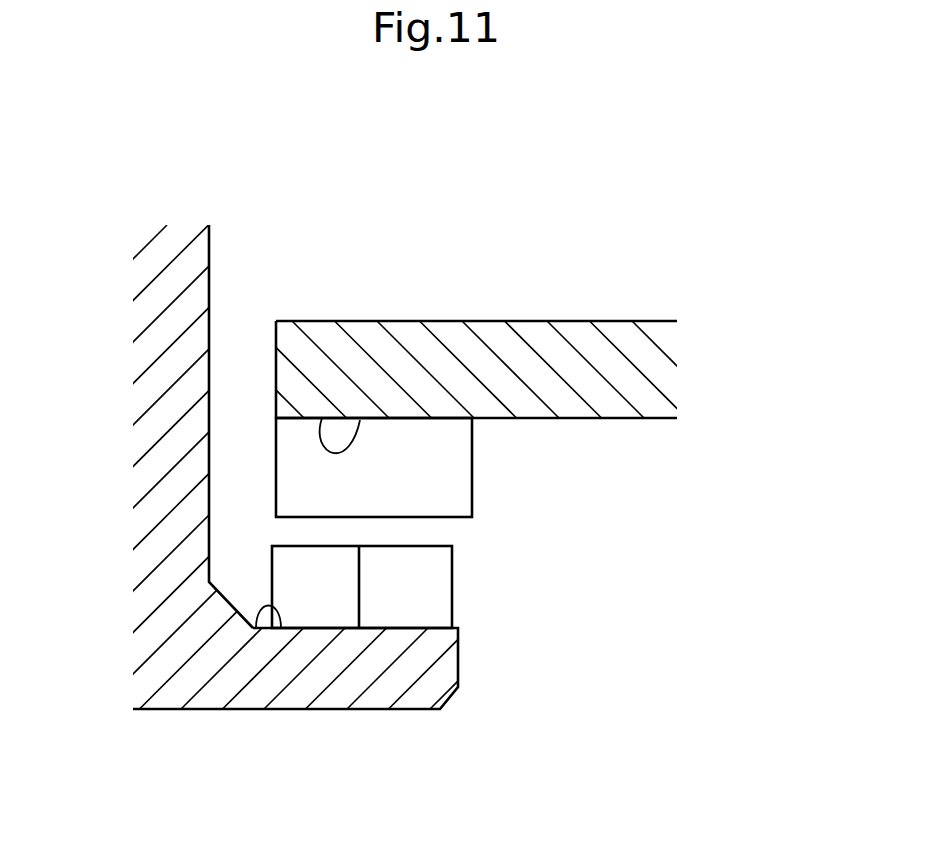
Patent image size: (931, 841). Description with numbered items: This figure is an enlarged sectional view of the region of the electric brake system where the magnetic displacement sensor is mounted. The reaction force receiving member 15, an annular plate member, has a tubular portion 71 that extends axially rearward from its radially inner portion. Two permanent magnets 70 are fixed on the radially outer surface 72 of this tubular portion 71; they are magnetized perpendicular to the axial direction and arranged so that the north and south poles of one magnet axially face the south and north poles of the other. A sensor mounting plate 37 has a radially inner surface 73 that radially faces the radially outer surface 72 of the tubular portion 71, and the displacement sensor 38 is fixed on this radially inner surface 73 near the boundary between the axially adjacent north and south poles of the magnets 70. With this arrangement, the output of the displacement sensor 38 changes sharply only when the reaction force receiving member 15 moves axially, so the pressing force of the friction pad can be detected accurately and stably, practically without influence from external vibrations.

The reaction force receiving member 15 is at (162, 372).
The sensor mounting plate 37 is at (627, 382).
The displacement sensor 38 is at (455, 485).
The permanent magnets 70 is at (339, 613).
The tubular portion 71 is at (443, 672).
The radially outer surface 72 is at (254, 630).
The radially inner surface 73 is at (322, 418).